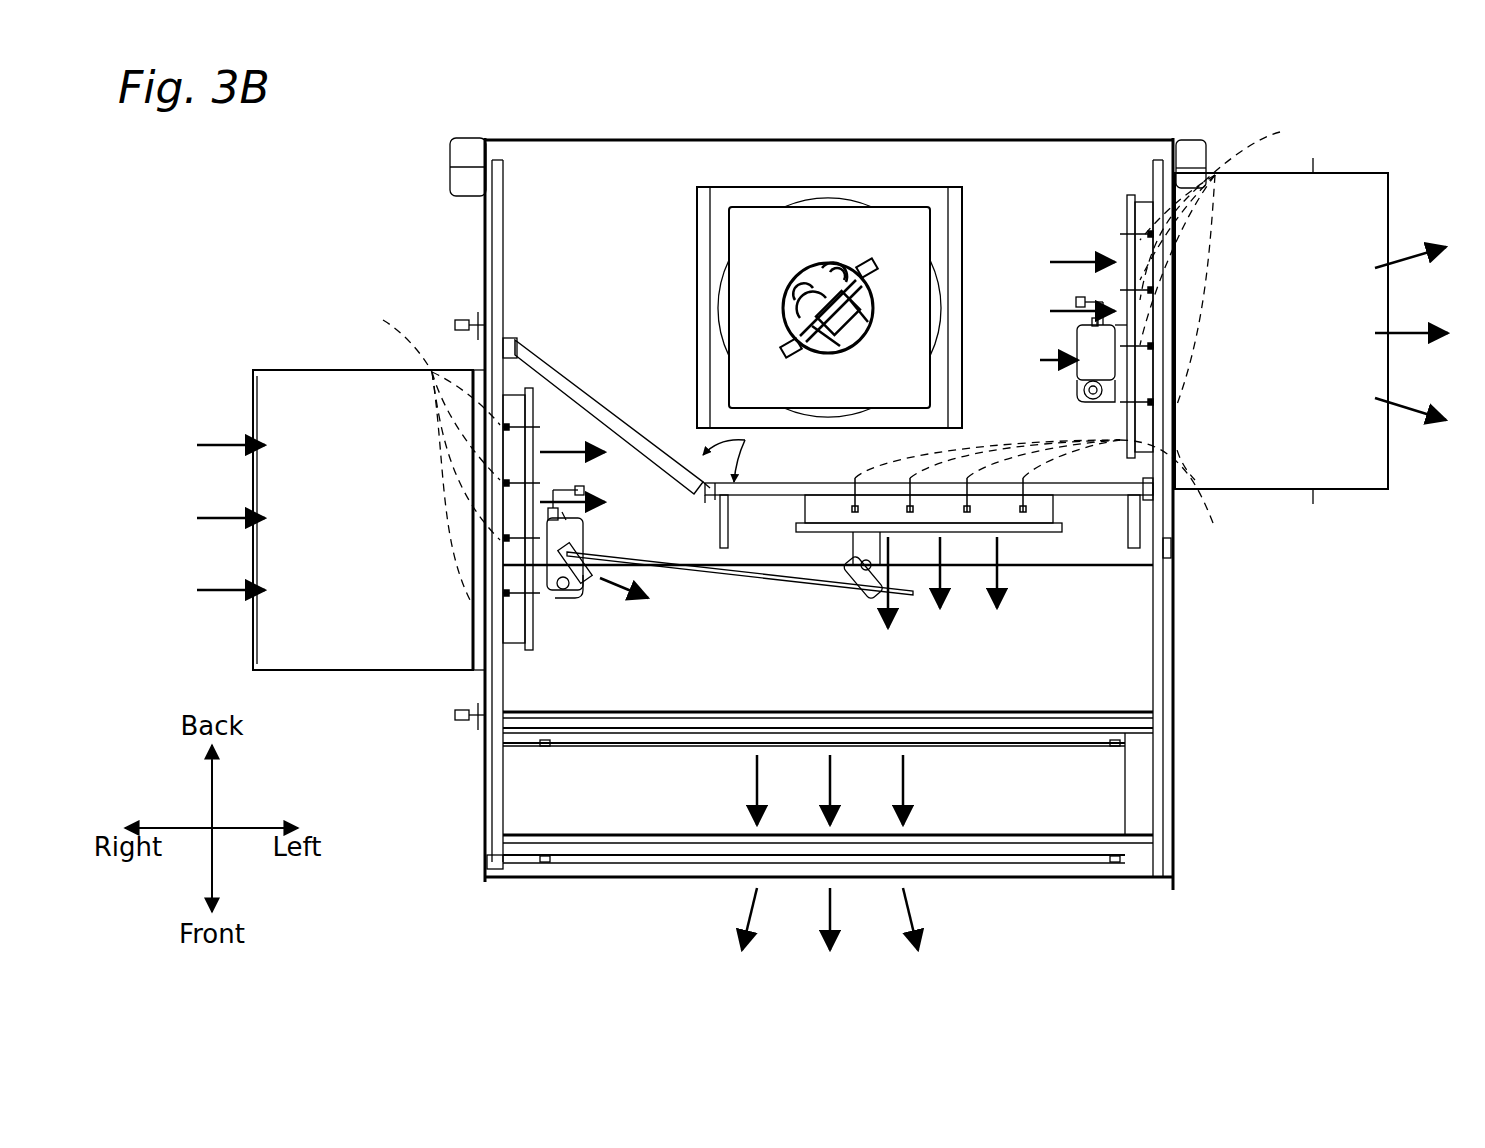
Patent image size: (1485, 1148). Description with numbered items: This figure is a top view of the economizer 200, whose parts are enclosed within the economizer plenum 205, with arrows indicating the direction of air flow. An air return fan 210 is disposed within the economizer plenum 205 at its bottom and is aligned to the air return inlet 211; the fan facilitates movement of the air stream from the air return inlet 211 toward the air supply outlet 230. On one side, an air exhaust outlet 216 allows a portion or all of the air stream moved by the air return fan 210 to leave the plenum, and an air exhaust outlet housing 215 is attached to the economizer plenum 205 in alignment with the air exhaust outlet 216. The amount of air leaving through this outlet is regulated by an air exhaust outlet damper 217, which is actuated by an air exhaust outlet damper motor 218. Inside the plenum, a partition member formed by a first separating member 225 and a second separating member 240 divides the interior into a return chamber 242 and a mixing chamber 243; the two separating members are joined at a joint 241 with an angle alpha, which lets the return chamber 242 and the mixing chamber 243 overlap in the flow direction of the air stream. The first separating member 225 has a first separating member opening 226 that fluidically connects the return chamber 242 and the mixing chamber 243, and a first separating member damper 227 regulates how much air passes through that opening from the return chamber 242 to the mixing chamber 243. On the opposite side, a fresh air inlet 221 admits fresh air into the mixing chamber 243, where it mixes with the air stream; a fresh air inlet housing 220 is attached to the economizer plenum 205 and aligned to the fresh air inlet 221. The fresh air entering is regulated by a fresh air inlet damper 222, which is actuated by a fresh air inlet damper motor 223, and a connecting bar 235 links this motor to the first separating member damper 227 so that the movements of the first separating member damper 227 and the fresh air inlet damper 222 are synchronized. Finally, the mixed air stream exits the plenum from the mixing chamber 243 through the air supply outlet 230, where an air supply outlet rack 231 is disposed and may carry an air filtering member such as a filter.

The economizer 200 is at (1365, 100).
The economizer plenum 205 is at (523, 138).
The air return fan 210 is at (818, 216).
The air return inlet 211 is at (912, 187).
The air exhaust outlet housing 215 is at (1348, 190).
The air exhaust outlet 216 is at (1122, 360).
The air exhaust outlet damper 217 is at (1255, 132).
The air exhaust outlet damper motor 218 is at (1080, 345).
The fresh air inlet housing 220 is at (273, 386).
The fresh air inlet 221 is at (528, 388).
The fresh air inlet damper 222 is at (390, 322).
The fresh air inlet damper motor 223 is at (585, 596).
The first separating member 225 is at (1115, 505).
The first separating member opening 226 is at (895, 540).
The first separating member damper 227 is at (1215, 528).
The air supply outlet 230 is at (718, 874).
The air supply outlet rack 231 is at (930, 736).
The connecting bar 235 is at (782, 583).
The second separating member 240 is at (580, 370).
The joint 241 is at (703, 497).
The return chamber 242 is at (662, 162).
The mixing chamber 243 is at (1115, 665).